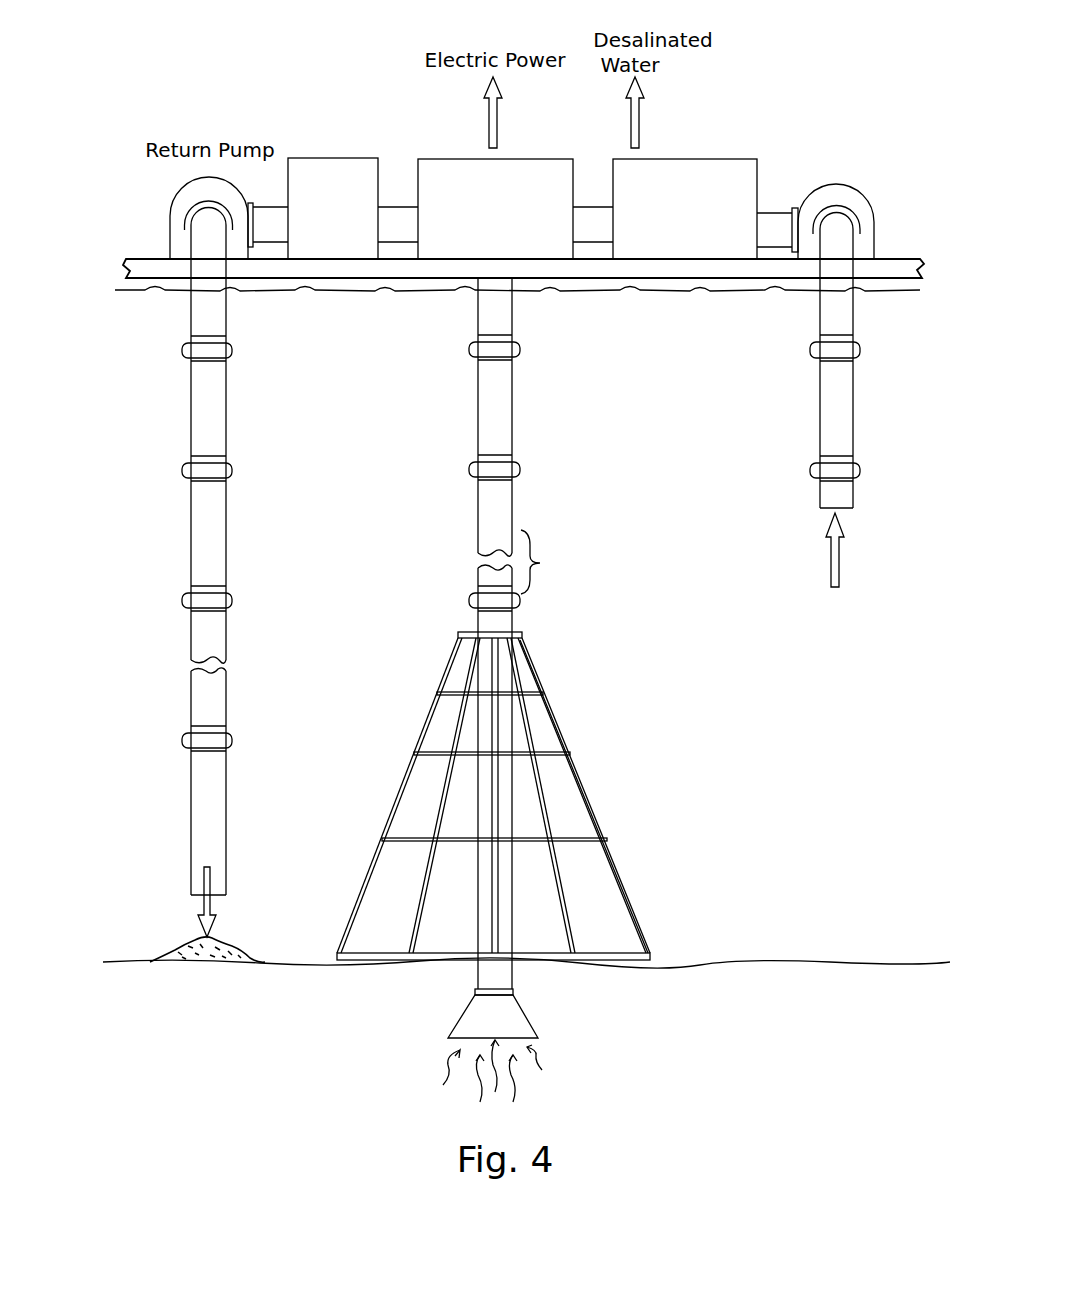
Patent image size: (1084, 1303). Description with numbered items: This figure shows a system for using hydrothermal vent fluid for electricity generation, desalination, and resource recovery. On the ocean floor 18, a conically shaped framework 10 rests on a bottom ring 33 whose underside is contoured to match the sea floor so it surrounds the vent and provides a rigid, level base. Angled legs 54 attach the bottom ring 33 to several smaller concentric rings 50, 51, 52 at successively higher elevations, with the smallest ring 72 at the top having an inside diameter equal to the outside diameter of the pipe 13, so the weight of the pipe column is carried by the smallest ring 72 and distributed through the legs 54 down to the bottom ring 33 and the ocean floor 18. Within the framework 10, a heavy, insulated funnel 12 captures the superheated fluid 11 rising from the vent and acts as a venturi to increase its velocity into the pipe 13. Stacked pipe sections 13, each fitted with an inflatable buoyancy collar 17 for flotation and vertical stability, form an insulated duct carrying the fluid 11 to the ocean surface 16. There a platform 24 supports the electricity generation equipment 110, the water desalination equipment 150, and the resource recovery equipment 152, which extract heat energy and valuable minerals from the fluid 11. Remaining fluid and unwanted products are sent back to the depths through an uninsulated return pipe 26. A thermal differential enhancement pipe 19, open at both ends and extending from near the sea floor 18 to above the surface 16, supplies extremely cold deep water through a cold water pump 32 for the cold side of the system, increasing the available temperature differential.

The conically shaped framework 10 is at (455, 635).
The superheated fluid 11 is at (529, 1071).
The funnel 12 is at (531, 1013).
The pipe section 13 is at (538, 633).
The ocean surface 16 is at (517, 334).
The buoyancy collar 17 is at (521, 539).
The ocean floor 18 is at (526, 925).
The thermal differential enhancement pipe 19 is at (874, 372).
The platform 24 is at (496, 246).
The return pipe 26 is at (240, 563).
The cold water pump 32 is at (854, 182).
The bottom ring 33 is at (513, 930).
The concentric ring 50 is at (529, 833).
The concentric ring 51 is at (529, 765).
The concentric ring 52 is at (525, 703).
The angled leg 54 is at (613, 796).
The smallest ring 72 is at (459, 609).
The electricity generation 110 is at (483, 171).
The water desalination 150 is at (685, 171).
The resource recovery equipment 152 is at (331, 171).